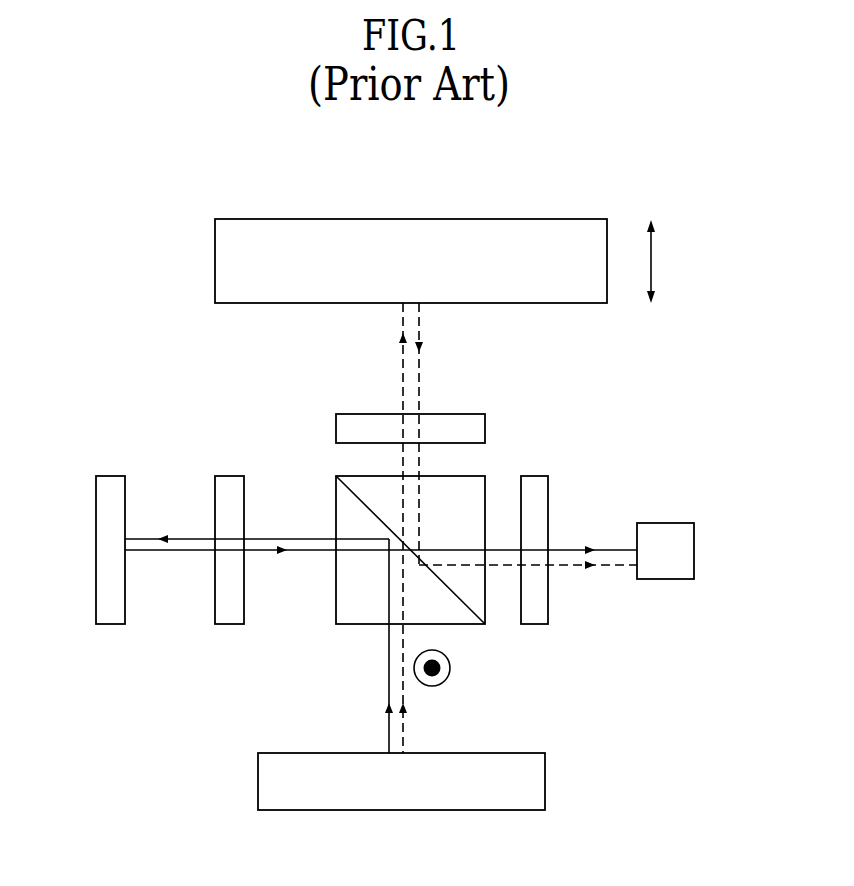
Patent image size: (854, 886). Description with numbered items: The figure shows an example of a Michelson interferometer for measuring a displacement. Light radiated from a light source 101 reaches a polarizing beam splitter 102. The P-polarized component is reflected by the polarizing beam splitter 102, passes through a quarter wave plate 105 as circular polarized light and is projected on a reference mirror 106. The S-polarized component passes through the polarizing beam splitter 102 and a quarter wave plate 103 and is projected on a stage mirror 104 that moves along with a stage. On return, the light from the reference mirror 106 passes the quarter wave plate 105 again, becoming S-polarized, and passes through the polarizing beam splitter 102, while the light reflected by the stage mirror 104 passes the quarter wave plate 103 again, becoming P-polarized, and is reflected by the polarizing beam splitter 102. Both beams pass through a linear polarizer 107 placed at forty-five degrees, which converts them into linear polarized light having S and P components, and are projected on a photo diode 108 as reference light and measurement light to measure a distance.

The light source 101 is at (545, 781).
The polarizing beam splitter 102 is at (343, 512).
The quarter wave plate 103 is at (485, 428).
The stage mirror 104 is at (412, 219).
The quarter wave plate 105 is at (227, 624).
The reference mirror 106 is at (110, 624).
The linear polarizer 107 is at (545, 508).
The photo diode 108 is at (694, 548).